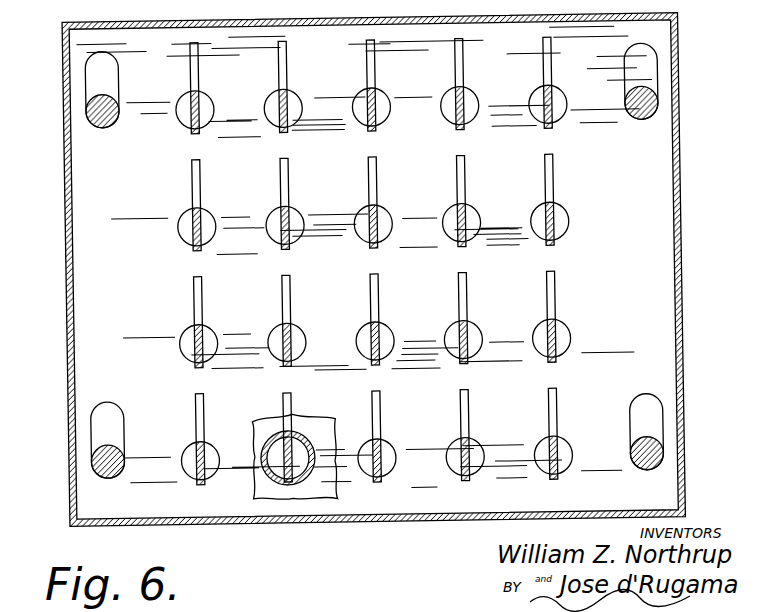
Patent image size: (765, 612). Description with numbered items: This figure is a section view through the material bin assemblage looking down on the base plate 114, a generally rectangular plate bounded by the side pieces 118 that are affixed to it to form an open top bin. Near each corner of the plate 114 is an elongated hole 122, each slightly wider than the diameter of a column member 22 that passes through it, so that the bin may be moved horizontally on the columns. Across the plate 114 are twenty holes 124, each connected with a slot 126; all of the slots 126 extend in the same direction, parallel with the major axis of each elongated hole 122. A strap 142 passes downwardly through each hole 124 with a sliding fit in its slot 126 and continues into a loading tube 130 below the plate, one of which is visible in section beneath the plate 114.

The column members 22 is at (656, 107).
The base plate 114 is at (643, 250).
The side pieces 118 is at (70, 303).
The elongated holes 122 is at (96, 80).
The holes 124 is at (386, 117).
The slot 126 is at (280, 64).
The loading tube 130 is at (300, 468).
The straps 142 is at (287, 108).